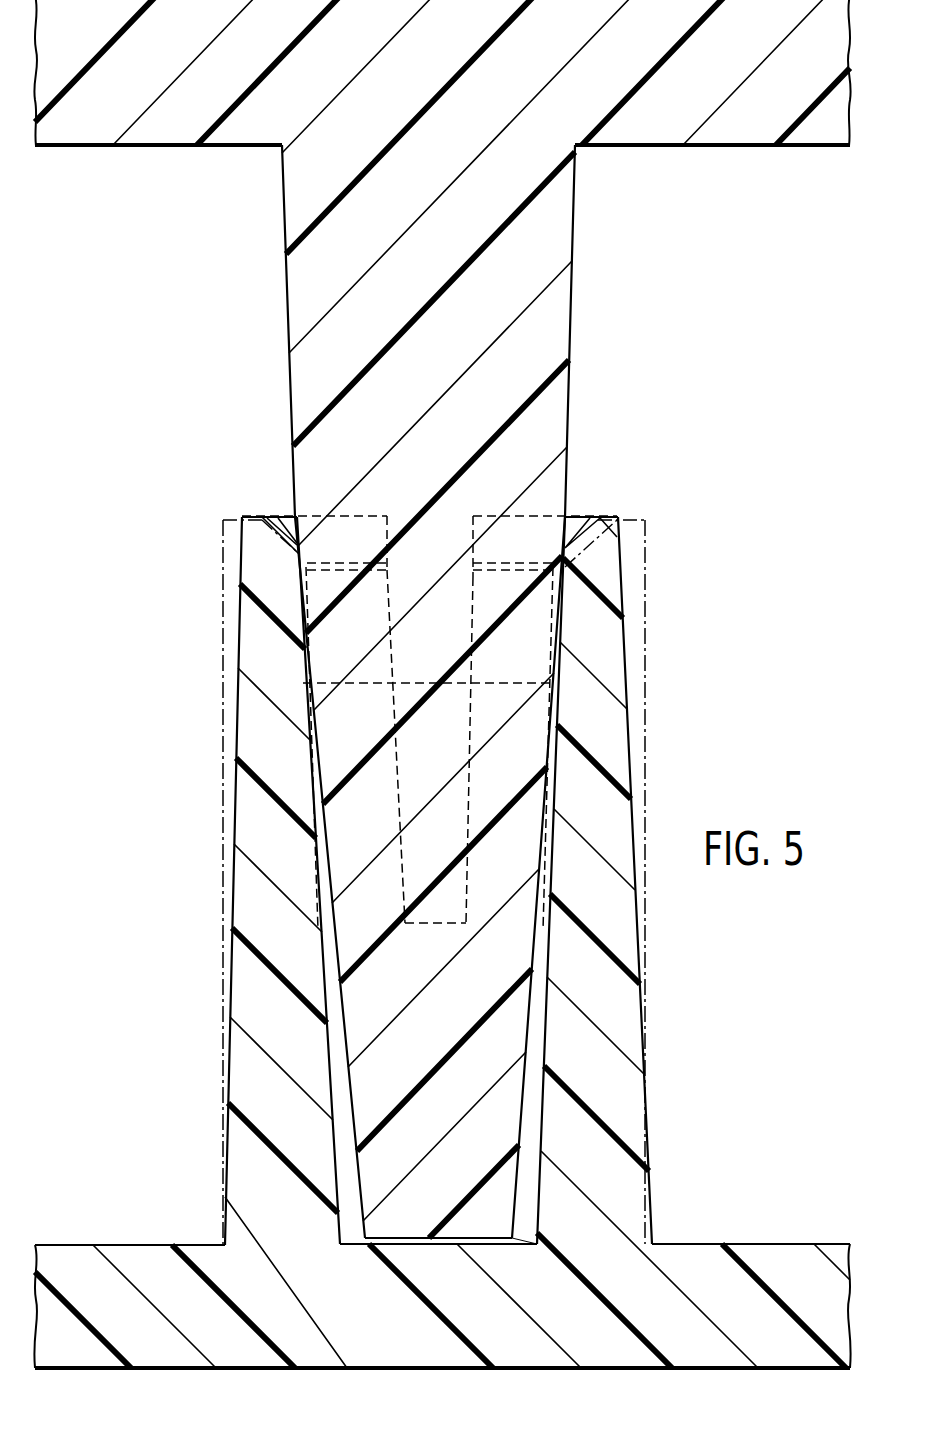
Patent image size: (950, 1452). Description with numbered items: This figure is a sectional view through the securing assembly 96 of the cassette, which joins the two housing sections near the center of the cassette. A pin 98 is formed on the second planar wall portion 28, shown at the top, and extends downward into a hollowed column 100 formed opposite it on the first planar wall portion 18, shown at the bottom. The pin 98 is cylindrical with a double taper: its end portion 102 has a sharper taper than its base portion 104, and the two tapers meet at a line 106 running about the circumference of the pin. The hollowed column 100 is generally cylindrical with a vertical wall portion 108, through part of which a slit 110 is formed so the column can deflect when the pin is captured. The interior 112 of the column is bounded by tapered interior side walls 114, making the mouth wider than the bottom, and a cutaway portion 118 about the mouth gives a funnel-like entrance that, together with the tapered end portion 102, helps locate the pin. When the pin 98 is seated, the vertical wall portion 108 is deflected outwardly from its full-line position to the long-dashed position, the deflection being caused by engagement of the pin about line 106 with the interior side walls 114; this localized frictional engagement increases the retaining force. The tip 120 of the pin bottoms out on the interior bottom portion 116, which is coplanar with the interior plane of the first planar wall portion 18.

The first planar wall portion 18 is at (750, 1244).
The second planar wall portion 28 is at (718, 136).
The securing assembly 96 is at (692, 434).
The pin 98 is at (442, 636).
The hollowed column 100 is at (442, 921).
The end portion 102 is at (424, 895).
The base portion 104 is at (310, 280).
The line 106 is at (474, 681).
The vertical wall portion 108 is at (435, 859).
The slit 110 is at (471, 876).
The interior 112 is at (525, 1205).
The interior side walls 114 is at (335, 1038).
The interior bottom portion 116 is at (493, 1244).
The cutaway portion 118 is at (289, 523).
The tip 120 is at (405, 1244).